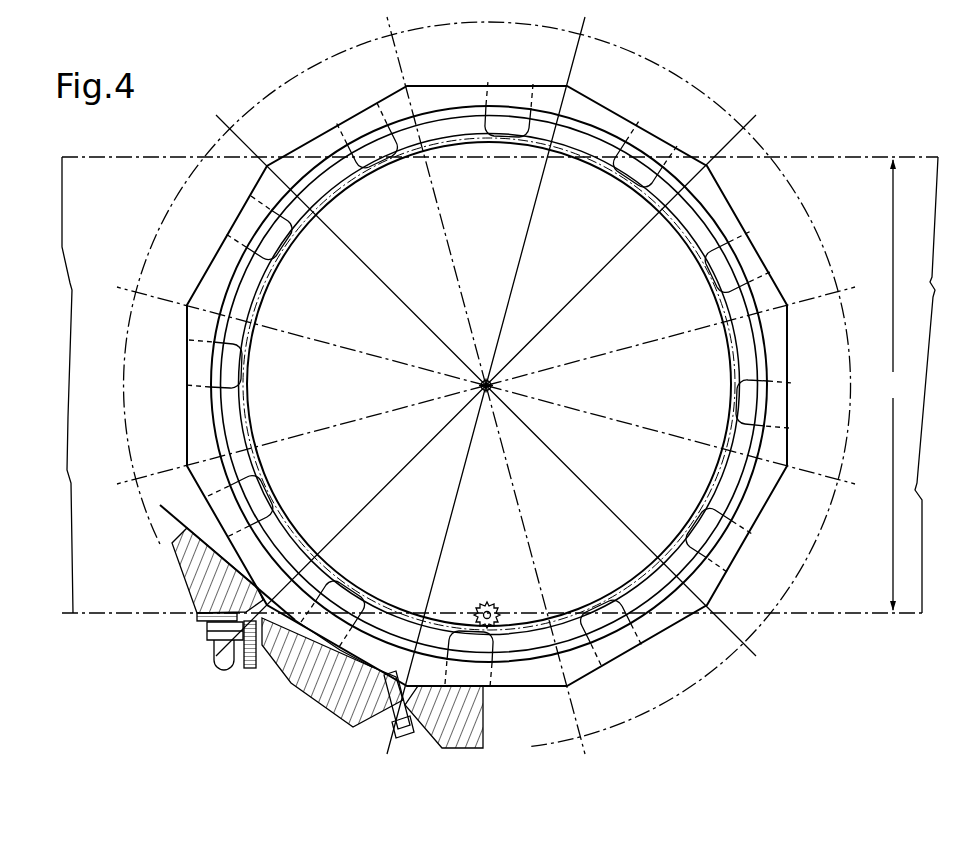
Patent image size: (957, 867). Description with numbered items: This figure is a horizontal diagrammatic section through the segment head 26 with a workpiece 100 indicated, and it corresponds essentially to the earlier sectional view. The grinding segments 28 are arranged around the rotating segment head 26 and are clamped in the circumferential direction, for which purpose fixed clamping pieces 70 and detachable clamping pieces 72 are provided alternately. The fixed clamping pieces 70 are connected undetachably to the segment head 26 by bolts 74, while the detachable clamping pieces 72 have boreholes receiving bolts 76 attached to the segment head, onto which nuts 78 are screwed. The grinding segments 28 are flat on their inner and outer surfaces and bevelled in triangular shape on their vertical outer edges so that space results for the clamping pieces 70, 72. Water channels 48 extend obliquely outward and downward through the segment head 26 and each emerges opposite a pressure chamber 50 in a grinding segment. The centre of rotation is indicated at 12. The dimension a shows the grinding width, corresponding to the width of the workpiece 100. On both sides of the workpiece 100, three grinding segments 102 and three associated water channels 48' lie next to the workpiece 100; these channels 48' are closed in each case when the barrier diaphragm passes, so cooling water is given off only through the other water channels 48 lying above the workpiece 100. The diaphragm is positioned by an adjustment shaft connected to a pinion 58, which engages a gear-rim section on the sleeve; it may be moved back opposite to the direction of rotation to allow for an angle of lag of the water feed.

The central axis 12 is at (480, 395).
The segment head 26 is at (628, 475).
The grinding segments 28 is at (830, 305).
The water channels 48 is at (489, 366).
The water channels 48' is at (526, 384).
The pressure chamber 50 is at (348, 655).
The pinion 58 is at (492, 603).
The fixed clamping pieces 70 is at (358, 722).
The detachable clamping pieces 72 is at (252, 660).
The bolts 74 is at (390, 735).
The bolt 76 is at (215, 648).
The nuts 78 is at (230, 663).
The workpiece 100 is at (826, 614).
The grinding segments 102 is at (290, 86).